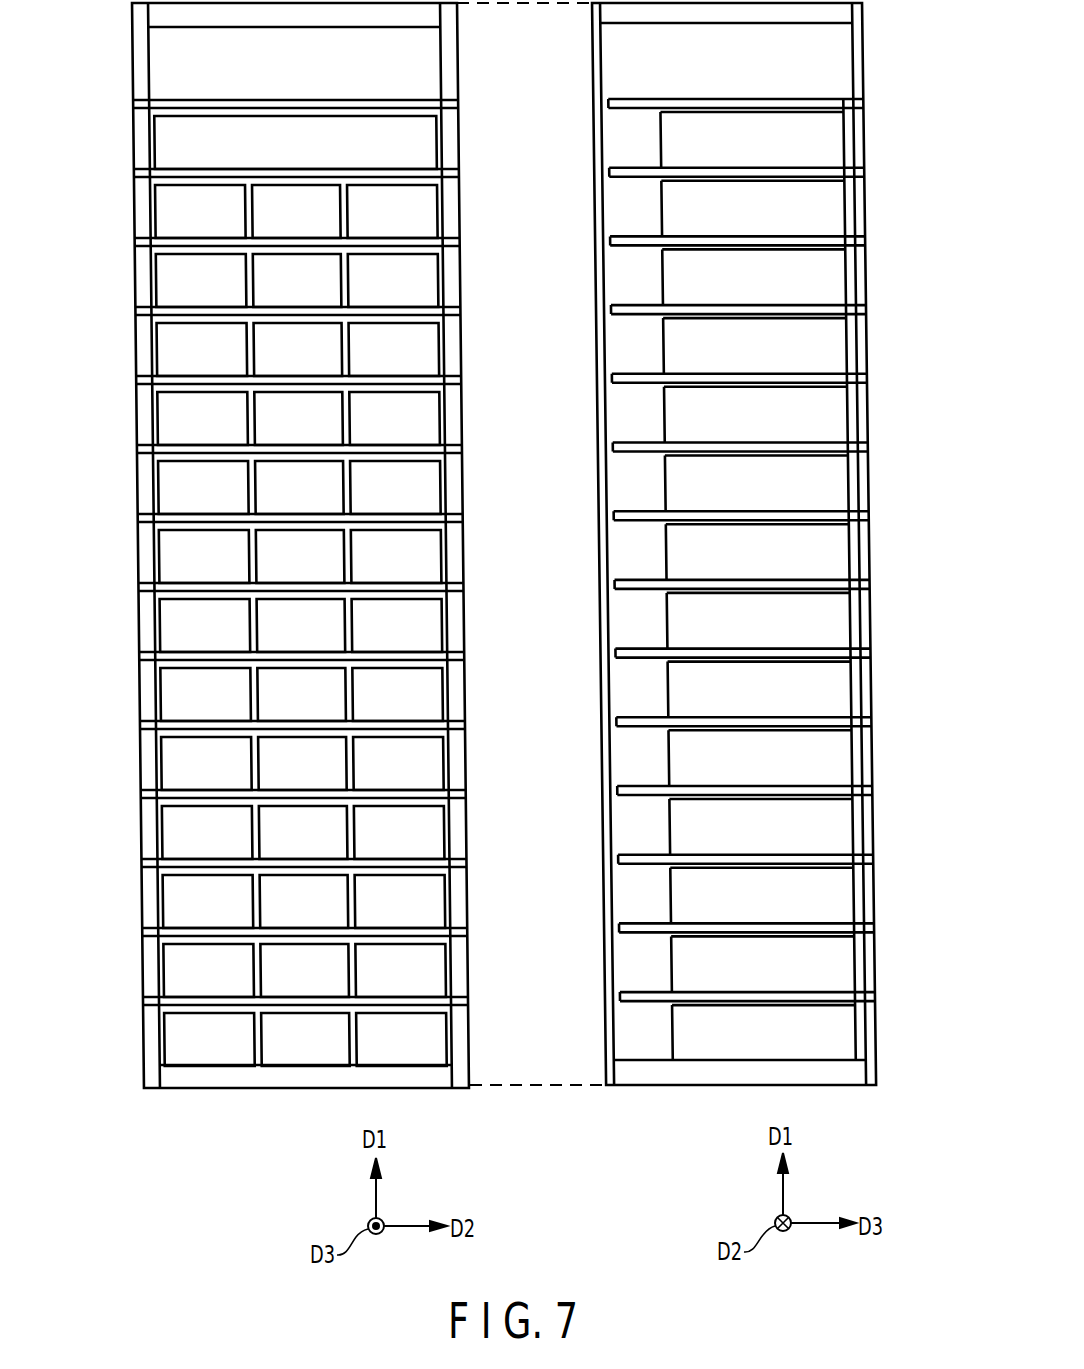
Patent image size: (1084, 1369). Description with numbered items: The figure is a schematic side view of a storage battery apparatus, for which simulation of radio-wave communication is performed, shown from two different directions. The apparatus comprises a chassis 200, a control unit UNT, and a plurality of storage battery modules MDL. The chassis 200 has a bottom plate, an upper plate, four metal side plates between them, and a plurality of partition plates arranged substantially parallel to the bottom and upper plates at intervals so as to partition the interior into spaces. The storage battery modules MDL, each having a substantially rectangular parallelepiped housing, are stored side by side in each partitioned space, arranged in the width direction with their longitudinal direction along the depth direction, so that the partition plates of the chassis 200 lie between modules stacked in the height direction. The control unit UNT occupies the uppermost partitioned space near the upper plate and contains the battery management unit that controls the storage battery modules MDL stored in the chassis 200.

The chassis 200 is at (136, 880).
The control unit UNT is at (172, 143).
The storage battery module MDL is at (173, 283).